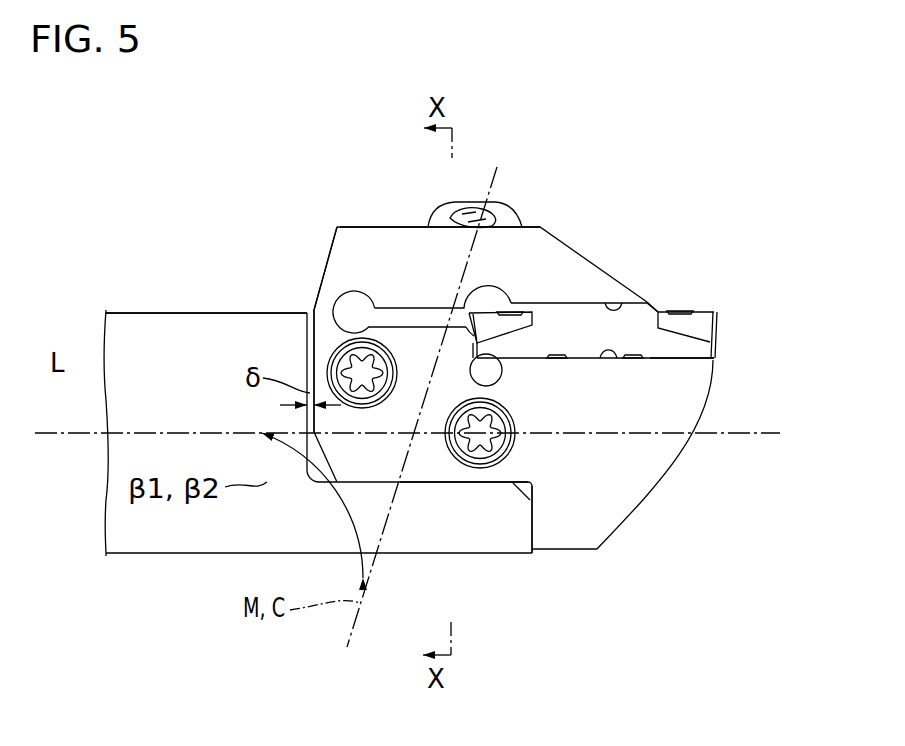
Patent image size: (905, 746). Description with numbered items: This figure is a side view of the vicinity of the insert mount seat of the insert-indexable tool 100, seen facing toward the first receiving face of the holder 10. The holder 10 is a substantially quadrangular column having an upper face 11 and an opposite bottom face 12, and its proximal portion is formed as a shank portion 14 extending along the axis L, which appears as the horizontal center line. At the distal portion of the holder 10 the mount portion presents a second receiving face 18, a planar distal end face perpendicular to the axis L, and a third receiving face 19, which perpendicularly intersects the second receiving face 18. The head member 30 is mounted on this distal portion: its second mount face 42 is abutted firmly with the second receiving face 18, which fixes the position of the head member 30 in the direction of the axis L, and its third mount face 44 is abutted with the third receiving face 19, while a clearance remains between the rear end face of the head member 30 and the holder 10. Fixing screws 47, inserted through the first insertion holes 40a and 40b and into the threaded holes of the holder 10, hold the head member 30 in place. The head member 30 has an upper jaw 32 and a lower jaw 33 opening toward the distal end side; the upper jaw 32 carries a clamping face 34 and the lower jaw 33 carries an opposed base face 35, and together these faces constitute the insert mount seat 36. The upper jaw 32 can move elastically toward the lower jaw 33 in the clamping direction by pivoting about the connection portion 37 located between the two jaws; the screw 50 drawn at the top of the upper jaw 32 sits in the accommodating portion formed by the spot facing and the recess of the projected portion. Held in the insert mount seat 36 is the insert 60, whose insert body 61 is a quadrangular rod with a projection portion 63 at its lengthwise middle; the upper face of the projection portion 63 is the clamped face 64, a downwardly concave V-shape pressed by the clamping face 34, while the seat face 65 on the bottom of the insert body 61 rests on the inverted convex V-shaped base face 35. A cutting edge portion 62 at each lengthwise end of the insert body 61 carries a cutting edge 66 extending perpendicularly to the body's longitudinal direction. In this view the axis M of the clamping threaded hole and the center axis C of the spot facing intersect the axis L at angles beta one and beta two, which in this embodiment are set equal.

The holder 10 is at (225, 250).
The upper face 11 is at (155, 310).
The bottom face 12 is at (150, 553).
The shank portion 14 is at (99, 290).
The second receiving face 18 is at (537, 533).
The third receiving face 19 is at (512, 475).
The head member 30 is at (632, 540).
The upper jaw 32 is at (383, 237).
The lower jaw 33 is at (657, 480).
The clamping face 34 is at (621, 301).
The base face 35 is at (617, 358).
The insert mount seat 36 is at (374, 280).
The connection portion 37 is at (325, 312).
The first insertion hole 40a is at (460, 405).
The first insertion hole 40b is at (382, 355).
The second mount face 42 is at (530, 517).
The third mount face 44 is at (485, 485).
The fixing screw 47 is at (343, 365).
The clamp screw 50 is at (466, 204).
The insert 60 is at (724, 353).
The insert body 61 is at (683, 350).
The cutting edge portion 62 is at (700, 325).
The projection portion 63 is at (648, 302).
The clamped face 64 is at (572, 297).
The seat face 65 is at (590, 360).
The cutting edge 66 is at (718, 311).
The insert-indexable tool 100 is at (657, 195).